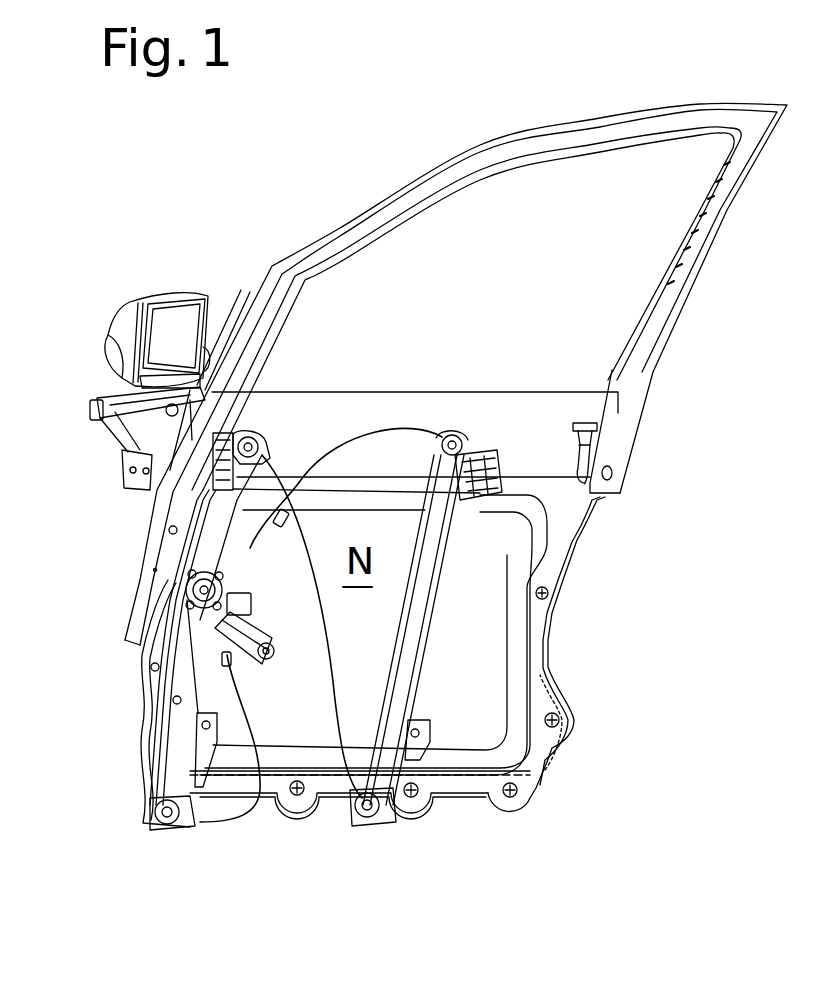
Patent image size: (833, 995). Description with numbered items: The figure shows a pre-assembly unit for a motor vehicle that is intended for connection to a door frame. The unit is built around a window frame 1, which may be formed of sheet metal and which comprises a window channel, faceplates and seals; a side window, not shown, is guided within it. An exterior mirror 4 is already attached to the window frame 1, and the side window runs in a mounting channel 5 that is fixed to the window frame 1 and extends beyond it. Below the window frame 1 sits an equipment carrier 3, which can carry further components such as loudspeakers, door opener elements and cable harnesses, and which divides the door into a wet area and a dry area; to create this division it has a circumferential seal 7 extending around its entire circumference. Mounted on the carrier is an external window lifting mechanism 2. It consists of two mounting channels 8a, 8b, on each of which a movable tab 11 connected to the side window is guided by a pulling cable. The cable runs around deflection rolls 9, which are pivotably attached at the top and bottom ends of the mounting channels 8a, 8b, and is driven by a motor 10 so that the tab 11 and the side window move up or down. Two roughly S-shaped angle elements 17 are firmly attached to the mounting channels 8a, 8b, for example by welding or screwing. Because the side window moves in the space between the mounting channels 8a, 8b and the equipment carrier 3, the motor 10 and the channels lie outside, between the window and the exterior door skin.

The window frame 1 is at (665, 307).
The window lifting mechanism 2 is at (463, 609).
The equipment carrier 3 is at (568, 517).
The exterior mirror 4 is at (133, 325).
The mounting channel 5 is at (153, 525).
The circumferential seal 7 is at (540, 767).
The mounting channel 8a is at (167, 773).
The mounting channel 8b is at (403, 677).
The deflection rolls 9 is at (250, 437).
The motor 10 is at (170, 597).
The movable tab 11 is at (490, 455).
The angle elements 17 is at (413, 757).